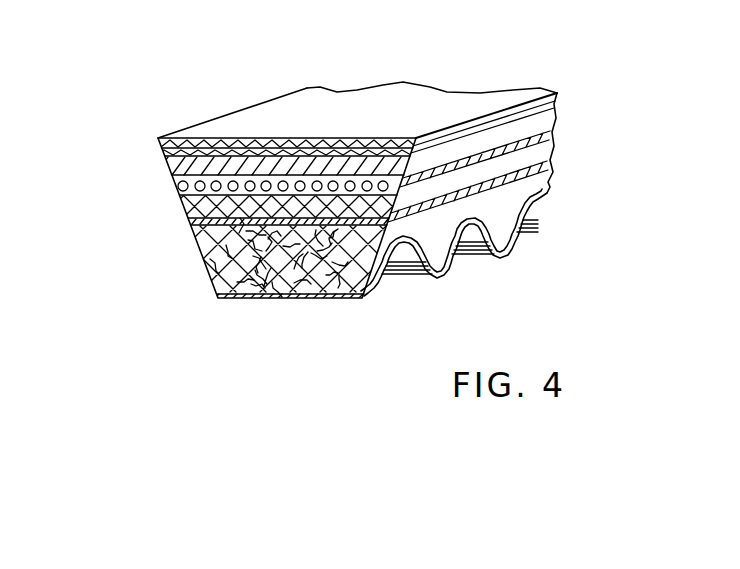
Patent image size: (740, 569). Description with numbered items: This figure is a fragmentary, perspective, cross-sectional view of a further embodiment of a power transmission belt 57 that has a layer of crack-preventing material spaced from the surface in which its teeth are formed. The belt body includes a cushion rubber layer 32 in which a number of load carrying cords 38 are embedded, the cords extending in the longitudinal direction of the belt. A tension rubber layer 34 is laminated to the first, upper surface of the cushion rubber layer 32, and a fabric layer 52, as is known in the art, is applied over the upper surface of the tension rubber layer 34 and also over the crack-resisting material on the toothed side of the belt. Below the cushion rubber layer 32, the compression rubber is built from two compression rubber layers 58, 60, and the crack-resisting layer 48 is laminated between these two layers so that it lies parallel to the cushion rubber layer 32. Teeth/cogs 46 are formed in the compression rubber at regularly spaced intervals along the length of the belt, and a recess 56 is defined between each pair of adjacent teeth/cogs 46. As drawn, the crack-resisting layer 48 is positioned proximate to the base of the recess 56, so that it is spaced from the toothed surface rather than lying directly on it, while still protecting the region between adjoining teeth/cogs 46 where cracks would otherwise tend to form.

The cushion rubber layer 32 is at (220, 200).
The tension rubber layer 34 is at (178, 165).
The load carrying cords 38 is at (180, 185).
The teeth/cogs 46 is at (434, 255).
The crack-resisting layer 48 is at (240, 225).
The fabric layer 52 is at (357, 138).
The recess 56 is at (399, 243).
The power transmission belt 57 is at (494, 58).
The compression rubber layer 58 is at (532, 160).
The compression rubber layer 60 is at (283, 270).